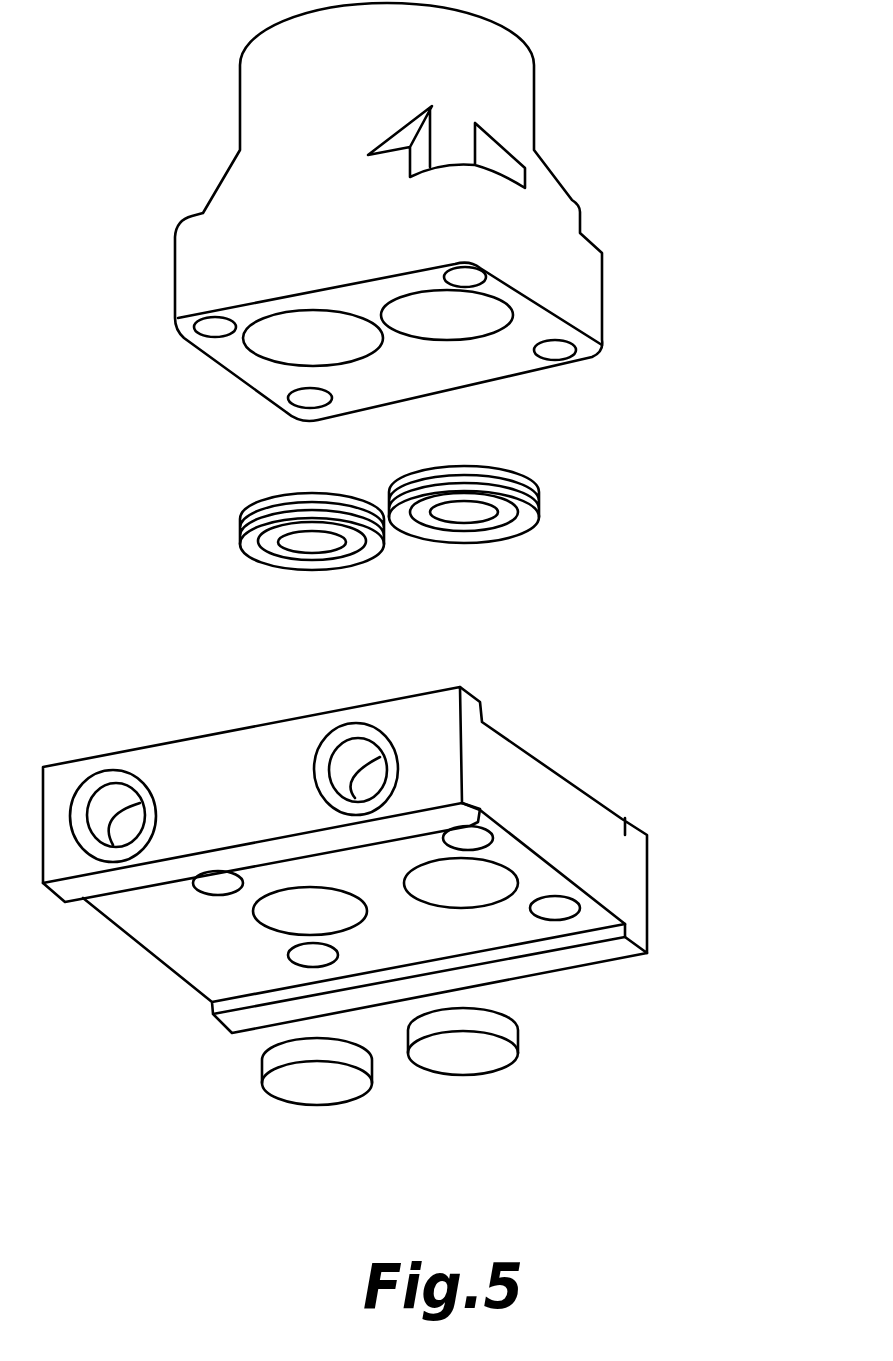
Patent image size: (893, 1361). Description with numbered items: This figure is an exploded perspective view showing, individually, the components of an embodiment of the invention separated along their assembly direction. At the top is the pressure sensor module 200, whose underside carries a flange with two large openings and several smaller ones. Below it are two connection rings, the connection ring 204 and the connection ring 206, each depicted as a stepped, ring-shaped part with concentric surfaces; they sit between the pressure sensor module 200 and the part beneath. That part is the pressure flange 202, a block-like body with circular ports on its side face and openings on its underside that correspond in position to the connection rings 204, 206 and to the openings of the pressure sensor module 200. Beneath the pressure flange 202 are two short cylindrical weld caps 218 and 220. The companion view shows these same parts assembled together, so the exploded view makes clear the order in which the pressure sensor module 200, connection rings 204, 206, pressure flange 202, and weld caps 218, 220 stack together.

The pressure sensor module 200 is at (547, 190).
The pressure flange 202 is at (630, 870).
The connection ring 204 is at (235, 528).
The connection ring 206 is at (540, 493).
The weld cap 218 is at (302, 1089).
The weld cap 220 is at (475, 1049).